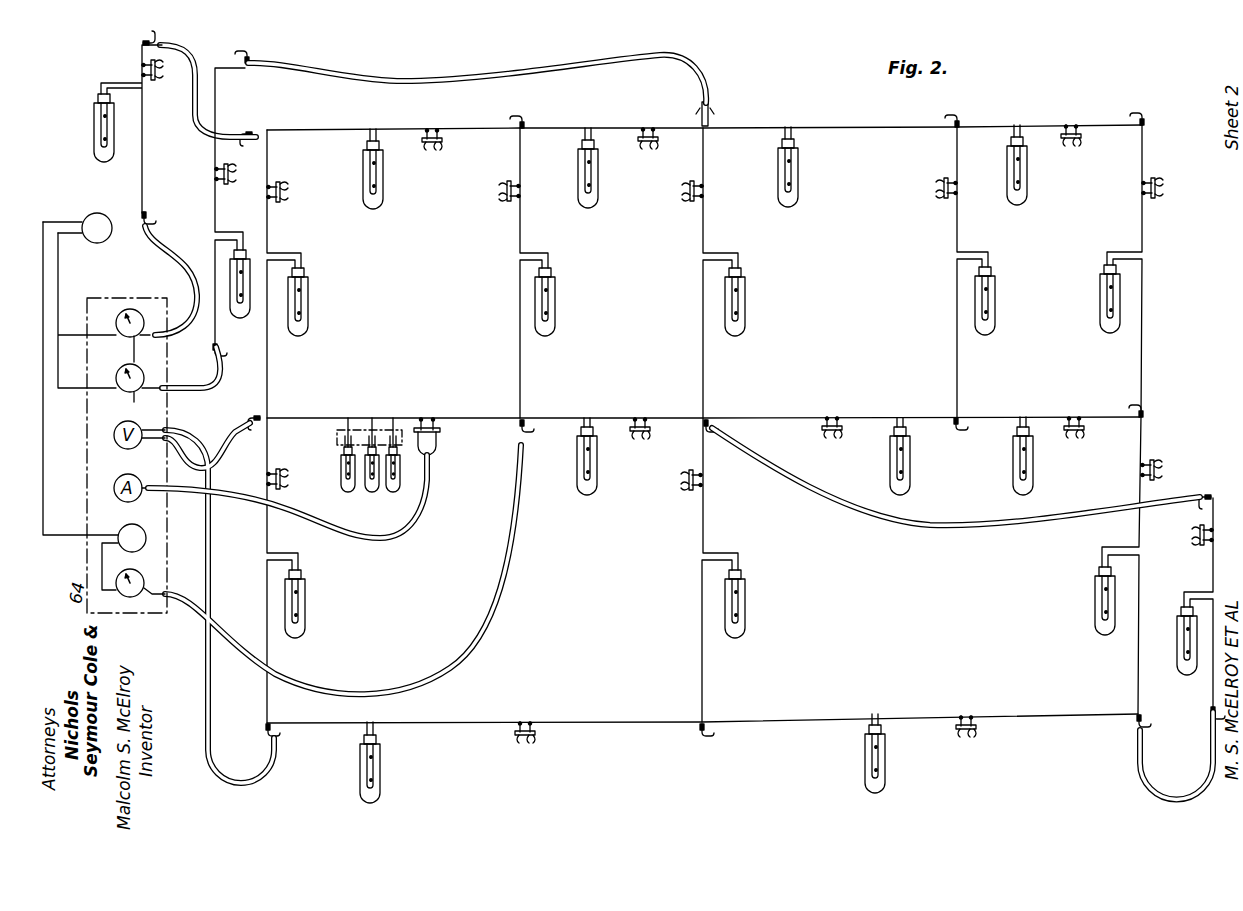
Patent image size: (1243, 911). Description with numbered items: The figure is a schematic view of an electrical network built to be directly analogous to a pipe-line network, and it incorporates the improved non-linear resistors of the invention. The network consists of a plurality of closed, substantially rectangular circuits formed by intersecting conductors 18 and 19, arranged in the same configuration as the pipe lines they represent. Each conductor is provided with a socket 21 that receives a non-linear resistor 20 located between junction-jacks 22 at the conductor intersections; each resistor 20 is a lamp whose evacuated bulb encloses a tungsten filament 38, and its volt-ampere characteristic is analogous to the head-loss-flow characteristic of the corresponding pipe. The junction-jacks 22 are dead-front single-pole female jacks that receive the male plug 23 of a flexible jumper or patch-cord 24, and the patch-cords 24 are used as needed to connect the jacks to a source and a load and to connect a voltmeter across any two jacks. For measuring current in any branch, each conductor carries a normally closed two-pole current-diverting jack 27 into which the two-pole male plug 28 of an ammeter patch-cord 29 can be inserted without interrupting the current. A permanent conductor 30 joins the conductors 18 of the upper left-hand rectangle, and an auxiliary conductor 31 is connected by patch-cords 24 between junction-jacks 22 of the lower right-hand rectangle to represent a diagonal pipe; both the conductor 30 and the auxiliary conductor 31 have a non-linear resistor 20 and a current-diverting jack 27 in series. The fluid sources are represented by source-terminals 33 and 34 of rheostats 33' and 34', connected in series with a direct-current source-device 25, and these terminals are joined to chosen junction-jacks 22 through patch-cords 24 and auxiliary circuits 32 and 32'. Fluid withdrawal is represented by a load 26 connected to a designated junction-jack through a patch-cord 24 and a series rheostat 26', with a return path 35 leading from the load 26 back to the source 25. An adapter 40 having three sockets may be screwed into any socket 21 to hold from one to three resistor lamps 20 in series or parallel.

The conductor 18 is at (330, 128).
The conductor 19 is at (267, 376).
The non-linear resistor 20 is at (93, 136).
The socket 21 is at (366, 145).
The junction-jack 22 is at (138, 43).
The male plug 23 is at (712, 110).
The patch-cord 24 is at (192, 112).
The source-device 25 is at (94, 212).
The load 26 is at (130, 547).
The rheostat 26' is at (144, 574).
The current-diverting jack 27 is at (160, 82).
The two-pole male plug 28 is at (437, 450).
The ammeter patch-cord 29 is at (382, 540).
The permanent conductor 30 is at (518, 345).
The auxiliary conductor 31 is at (1213, 577).
The auxiliary circuit 32 is at (136, 129).
The auxiliary circuit 32' is at (214, 206).
The source-terminal 33 is at (145, 348).
The rheostat 33' is at (101, 310).
The source-terminal 34 is at (147, 402).
The rheostat 34' is at (121, 369).
The return path 35 is at (66, 535).
The filament 38 is at (108, 132).
The adapter 40 is at (336, 438).